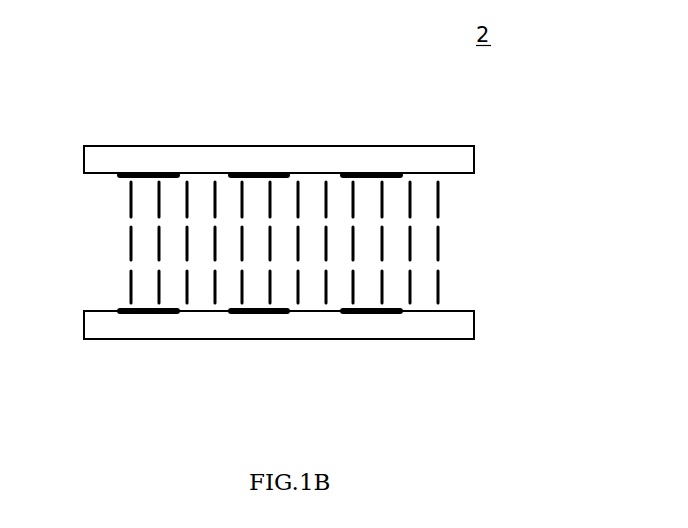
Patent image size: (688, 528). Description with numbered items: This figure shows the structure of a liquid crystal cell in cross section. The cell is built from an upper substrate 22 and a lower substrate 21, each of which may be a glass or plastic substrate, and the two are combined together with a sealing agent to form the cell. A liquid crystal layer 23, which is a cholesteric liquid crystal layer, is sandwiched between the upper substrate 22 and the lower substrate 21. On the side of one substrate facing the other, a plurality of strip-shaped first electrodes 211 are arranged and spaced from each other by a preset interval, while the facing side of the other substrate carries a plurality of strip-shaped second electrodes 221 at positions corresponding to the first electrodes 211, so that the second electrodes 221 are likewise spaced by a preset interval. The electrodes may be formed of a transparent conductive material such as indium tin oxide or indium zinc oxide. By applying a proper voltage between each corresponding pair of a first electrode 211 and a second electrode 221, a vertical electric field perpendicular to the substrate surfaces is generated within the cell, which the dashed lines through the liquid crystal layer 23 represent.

The lower substrate 21 is at (475, 162).
The upper substrate 22 is at (475, 327).
The liquid crystal layer 23 is at (457, 243).
The first electrodes 211 is at (168, 172).
The second electrodes 221 is at (271, 313).